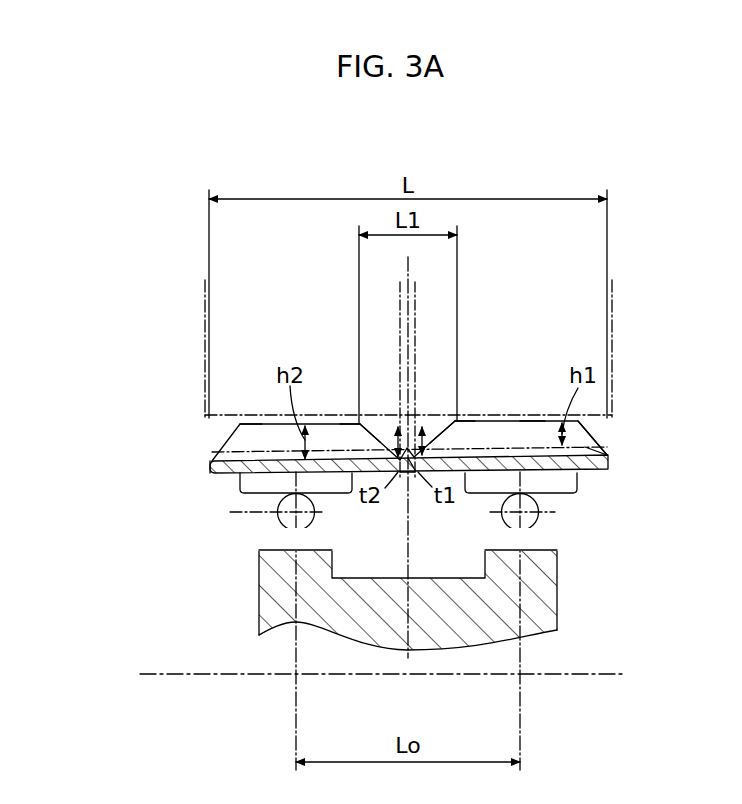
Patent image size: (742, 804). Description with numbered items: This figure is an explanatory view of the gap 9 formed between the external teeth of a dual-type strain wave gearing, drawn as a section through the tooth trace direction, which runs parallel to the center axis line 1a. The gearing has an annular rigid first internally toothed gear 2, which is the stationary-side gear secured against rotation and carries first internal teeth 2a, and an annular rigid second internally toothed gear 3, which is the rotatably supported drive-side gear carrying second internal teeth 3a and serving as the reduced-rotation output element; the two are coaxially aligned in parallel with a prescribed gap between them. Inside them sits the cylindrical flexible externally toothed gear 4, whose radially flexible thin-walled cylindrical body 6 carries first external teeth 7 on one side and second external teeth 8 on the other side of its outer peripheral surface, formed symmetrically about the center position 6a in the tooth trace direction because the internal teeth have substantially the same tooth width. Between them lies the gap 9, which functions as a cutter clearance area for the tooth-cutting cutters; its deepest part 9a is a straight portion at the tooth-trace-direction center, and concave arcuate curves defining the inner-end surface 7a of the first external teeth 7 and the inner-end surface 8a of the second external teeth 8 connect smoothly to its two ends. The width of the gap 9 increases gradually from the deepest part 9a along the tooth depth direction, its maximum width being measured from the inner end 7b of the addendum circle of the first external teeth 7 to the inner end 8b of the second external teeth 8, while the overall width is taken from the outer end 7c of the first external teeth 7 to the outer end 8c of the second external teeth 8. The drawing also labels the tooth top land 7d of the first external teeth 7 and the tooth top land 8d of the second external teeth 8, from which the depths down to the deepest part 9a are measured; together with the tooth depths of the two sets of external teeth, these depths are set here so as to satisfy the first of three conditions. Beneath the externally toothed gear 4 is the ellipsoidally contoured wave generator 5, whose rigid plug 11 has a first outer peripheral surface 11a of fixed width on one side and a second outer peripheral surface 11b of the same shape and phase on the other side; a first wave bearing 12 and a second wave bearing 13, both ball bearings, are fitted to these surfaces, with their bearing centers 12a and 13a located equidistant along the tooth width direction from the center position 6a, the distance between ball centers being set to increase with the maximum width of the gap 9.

The center axis line 1a is at (580, 676).
The first internally toothed gear 2 is at (616, 369).
The first internal teeth 2a is at (612, 407).
The second internally toothed gear 3 is at (200, 369).
The second internal teeth 3a is at (228, 415).
The externally toothed gear 4 is at (608, 442).
The wave generator 5 is at (442, 591).
The cylindrical body 6 is at (609, 477).
The center position 6a is at (405, 472).
The first external teeth 7 is at (505, 420).
The inner-end surface 7a is at (427, 446).
The inner end 7b is at (438, 450).
The outer end 7c is at (609, 456).
The top surface of projection 7 7d is at (527, 420).
The second external teeth 8 is at (243, 422).
The inner-end surface 8a is at (366, 428).
The inner end 8b is at (365, 428).
The outer end 8c is at (211, 462).
The top surface of projection 8 8d is at (265, 421).
The gap 9 is at (413, 446).
The deepest part 9a is at (415, 470).
The rigid plug 11 is at (562, 577).
The first outer peripheral surface 11a is at (553, 544).
The second outer peripheral surface 11b is at (274, 540).
The first wave bearing 12 is at (560, 513).
The bearing center 12a is at (500, 518).
The second wave bearing 13 is at (232, 512).
The bearing center 13a is at (310, 518).